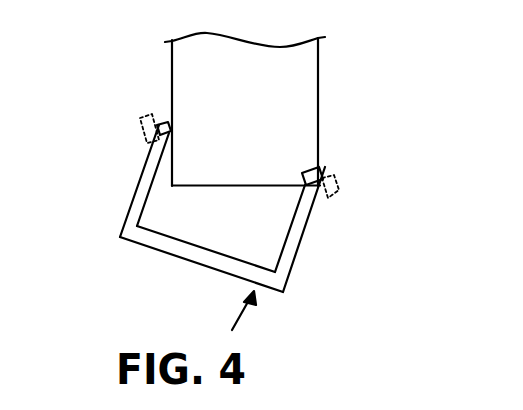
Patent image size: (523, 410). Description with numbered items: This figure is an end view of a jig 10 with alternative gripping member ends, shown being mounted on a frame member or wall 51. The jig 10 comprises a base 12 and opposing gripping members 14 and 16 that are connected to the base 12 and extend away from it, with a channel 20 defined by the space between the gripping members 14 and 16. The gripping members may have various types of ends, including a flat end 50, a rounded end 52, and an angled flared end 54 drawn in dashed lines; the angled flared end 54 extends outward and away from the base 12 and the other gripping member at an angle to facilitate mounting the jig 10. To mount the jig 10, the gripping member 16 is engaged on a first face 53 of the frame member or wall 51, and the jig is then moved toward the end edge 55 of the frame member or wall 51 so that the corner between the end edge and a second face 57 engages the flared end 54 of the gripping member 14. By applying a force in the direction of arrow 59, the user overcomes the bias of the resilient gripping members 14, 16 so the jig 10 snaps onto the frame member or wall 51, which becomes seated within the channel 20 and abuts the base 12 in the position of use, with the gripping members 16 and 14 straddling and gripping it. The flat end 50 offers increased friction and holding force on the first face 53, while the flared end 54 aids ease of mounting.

The jig 10 is at (151, 72).
The base 12 is at (218, 259).
The gripping member 14 is at (290, 242).
The gripping member 16 is at (142, 180).
The channel 20 is at (192, 228).
The flat end 50 is at (165, 124).
The frame member or wall 51 is at (318, 78).
The rounded end 52 is at (319, 170).
The first face 53 is at (172, 83).
The angled flared end 54 is at (330, 194).
The end edge 55 is at (260, 186).
The second face 57 is at (318, 108).
The arrow 59 is at (243, 315).